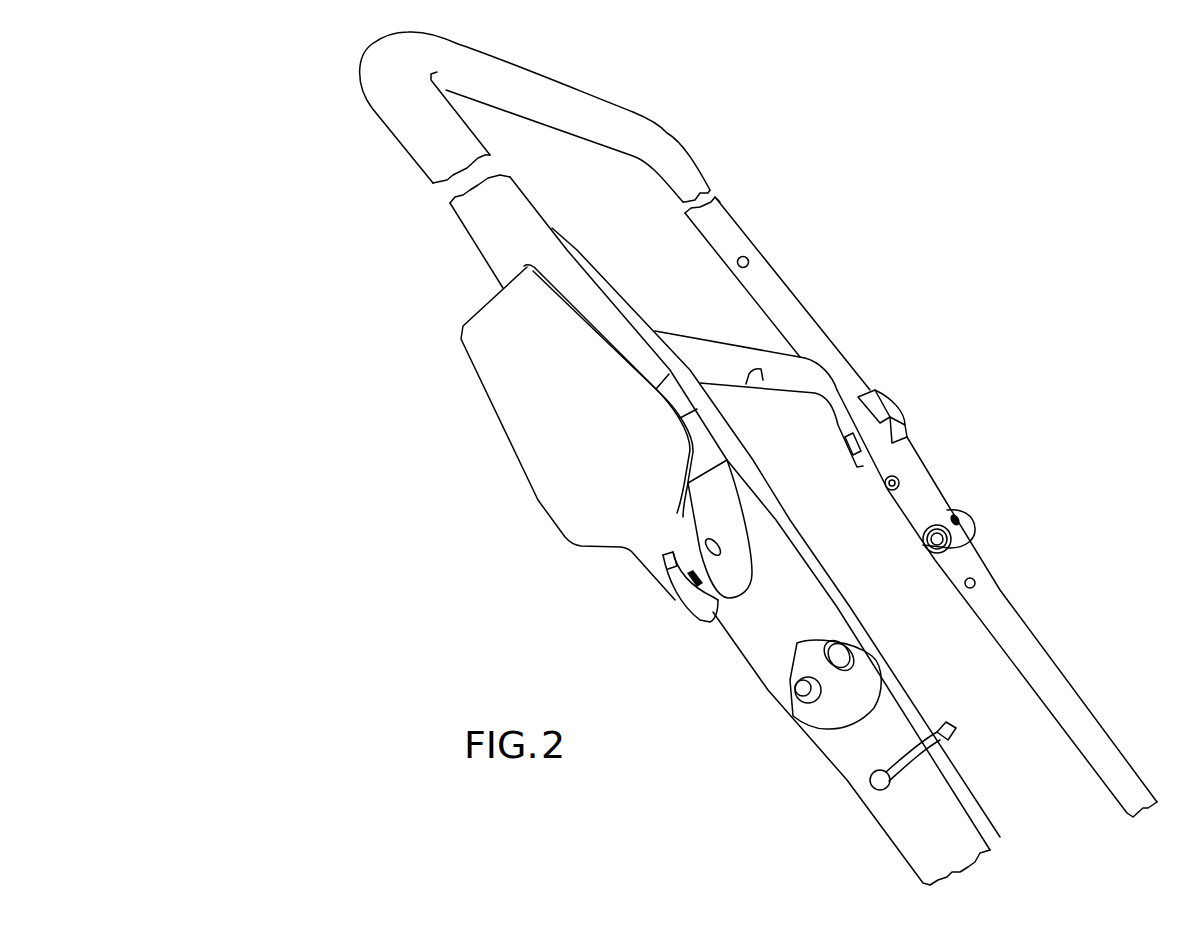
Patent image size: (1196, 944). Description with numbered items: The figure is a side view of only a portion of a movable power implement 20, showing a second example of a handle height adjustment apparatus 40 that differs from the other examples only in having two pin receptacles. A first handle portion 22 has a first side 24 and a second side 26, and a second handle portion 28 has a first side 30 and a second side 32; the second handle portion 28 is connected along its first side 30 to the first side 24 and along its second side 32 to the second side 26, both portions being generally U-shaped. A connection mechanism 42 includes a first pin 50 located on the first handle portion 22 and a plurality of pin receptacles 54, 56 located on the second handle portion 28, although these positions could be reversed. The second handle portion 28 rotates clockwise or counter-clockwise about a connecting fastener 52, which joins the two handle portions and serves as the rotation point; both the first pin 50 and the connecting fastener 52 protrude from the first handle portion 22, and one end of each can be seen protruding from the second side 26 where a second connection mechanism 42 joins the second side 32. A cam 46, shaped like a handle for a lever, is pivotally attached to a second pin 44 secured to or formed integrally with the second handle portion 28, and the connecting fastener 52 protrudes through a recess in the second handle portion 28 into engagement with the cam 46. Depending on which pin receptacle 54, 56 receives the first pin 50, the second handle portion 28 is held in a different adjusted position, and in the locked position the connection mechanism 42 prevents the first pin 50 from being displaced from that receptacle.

The handle assembly 20 is at (1011, 371).
The first handle portion 22 is at (1011, 603).
The first side 24 is at (977, 773).
The second side 26 is at (990, 600).
The second handle portion 28 is at (297, 117).
The first side 30 is at (762, 650).
The second side 32 is at (801, 285).
The handle height adjustment apparatus 40 is at (632, 549).
The connection mechanism 42 is at (980, 472).
The second pin 44 is at (688, 575).
The cam 46 is at (498, 398).
The first pin 50 is at (803, 682).
The connecting fastener 52 is at (886, 484).
The pin receptacle 54 is at (838, 706).
The pin receptacle 56 is at (848, 649).